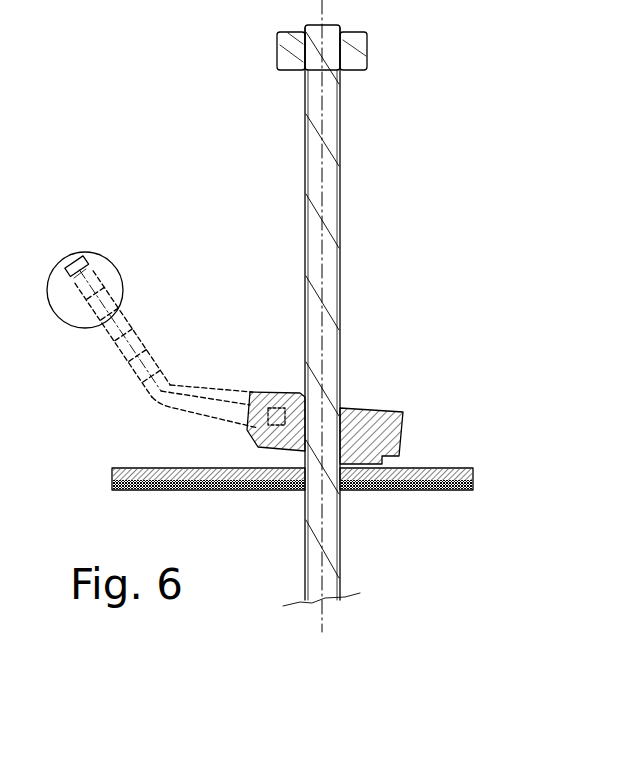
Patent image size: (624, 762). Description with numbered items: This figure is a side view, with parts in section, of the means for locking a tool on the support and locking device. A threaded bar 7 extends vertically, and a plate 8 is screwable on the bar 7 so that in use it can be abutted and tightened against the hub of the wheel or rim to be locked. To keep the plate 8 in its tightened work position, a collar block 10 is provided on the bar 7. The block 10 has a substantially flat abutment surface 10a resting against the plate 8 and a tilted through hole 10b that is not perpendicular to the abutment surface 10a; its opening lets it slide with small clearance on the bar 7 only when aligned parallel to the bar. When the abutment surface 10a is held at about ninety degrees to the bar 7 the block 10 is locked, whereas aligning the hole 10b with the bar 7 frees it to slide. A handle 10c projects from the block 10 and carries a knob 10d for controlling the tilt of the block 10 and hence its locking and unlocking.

The threaded bar 7 is at (340, 228).
The plate 8 is at (110, 470).
The collar block 10 is at (390, 411).
The abutment surface 10a is at (300, 455).
The tilted through hole 10b is at (324, 415).
The handle 10c is at (172, 387).
The knob 10d is at (107, 260).